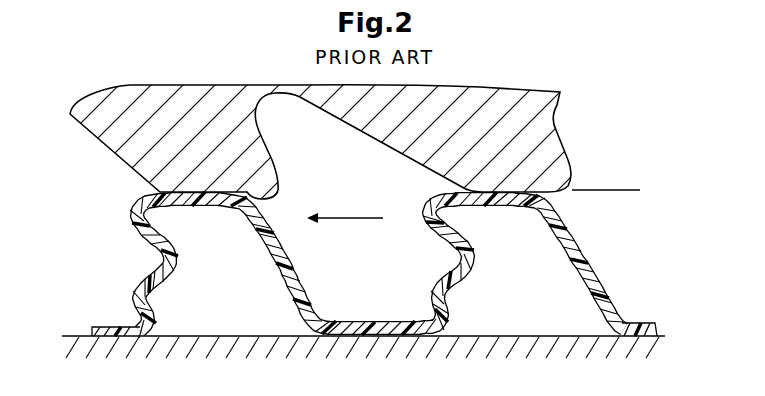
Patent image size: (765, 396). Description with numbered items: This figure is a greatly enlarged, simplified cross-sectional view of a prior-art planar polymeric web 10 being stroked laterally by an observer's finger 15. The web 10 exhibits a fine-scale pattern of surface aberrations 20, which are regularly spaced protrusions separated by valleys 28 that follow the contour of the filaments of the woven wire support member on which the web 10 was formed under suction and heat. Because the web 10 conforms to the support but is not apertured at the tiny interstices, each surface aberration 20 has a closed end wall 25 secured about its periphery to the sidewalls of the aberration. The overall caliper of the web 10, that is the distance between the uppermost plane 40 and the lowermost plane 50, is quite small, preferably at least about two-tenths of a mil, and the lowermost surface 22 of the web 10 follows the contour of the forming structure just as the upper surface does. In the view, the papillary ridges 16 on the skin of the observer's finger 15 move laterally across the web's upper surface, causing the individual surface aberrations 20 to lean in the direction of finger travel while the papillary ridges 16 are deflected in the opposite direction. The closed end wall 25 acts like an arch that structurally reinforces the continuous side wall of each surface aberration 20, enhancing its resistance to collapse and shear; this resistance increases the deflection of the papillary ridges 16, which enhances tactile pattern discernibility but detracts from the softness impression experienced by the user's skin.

The polymeric web 10 is at (348, 251).
The observer's finger 15 is at (282, 102).
The papillary ridges 16 is at (196, 137).
The surface aberrations 20 is at (288, 255).
The lowermost surface 22 is at (277, 272).
The closed end wall 25 is at (167, 193).
The valleys 28 is at (115, 327).
The uppermost plane 40 is at (608, 190).
The lowermost plane 50 is at (237, 335).